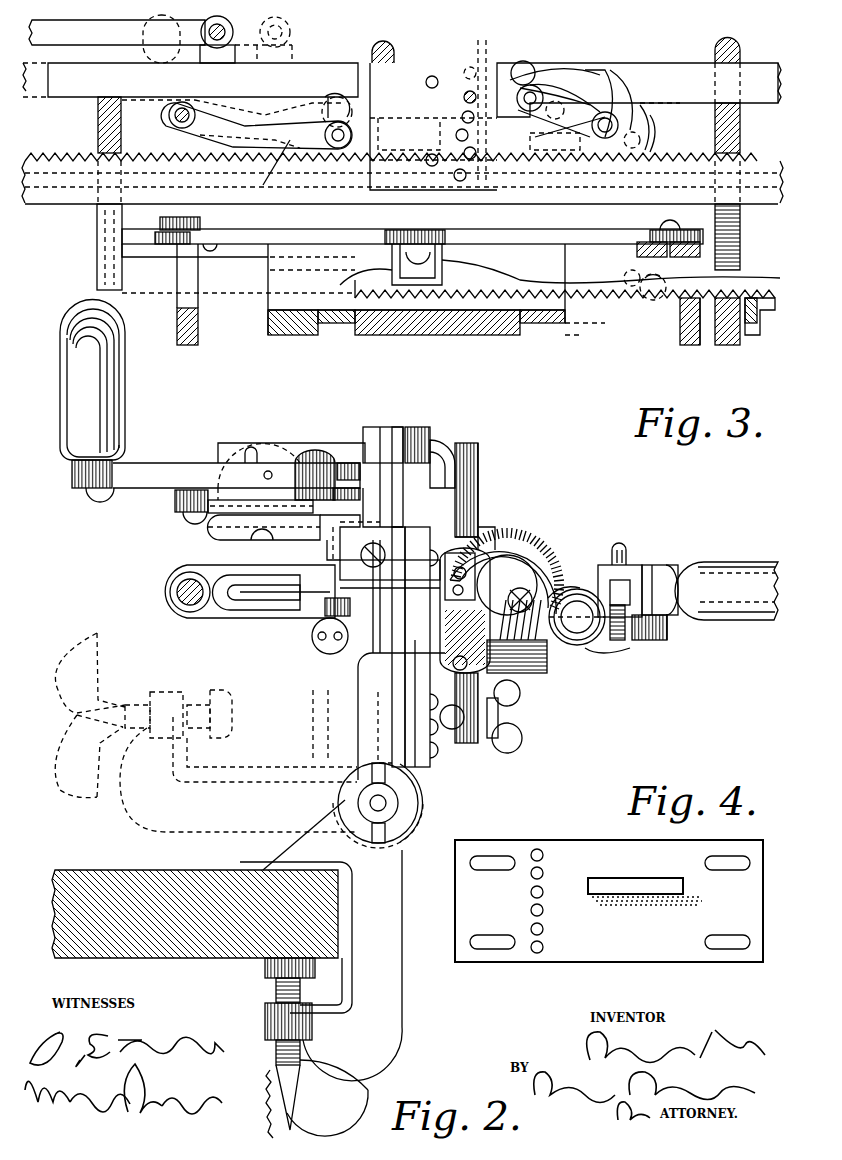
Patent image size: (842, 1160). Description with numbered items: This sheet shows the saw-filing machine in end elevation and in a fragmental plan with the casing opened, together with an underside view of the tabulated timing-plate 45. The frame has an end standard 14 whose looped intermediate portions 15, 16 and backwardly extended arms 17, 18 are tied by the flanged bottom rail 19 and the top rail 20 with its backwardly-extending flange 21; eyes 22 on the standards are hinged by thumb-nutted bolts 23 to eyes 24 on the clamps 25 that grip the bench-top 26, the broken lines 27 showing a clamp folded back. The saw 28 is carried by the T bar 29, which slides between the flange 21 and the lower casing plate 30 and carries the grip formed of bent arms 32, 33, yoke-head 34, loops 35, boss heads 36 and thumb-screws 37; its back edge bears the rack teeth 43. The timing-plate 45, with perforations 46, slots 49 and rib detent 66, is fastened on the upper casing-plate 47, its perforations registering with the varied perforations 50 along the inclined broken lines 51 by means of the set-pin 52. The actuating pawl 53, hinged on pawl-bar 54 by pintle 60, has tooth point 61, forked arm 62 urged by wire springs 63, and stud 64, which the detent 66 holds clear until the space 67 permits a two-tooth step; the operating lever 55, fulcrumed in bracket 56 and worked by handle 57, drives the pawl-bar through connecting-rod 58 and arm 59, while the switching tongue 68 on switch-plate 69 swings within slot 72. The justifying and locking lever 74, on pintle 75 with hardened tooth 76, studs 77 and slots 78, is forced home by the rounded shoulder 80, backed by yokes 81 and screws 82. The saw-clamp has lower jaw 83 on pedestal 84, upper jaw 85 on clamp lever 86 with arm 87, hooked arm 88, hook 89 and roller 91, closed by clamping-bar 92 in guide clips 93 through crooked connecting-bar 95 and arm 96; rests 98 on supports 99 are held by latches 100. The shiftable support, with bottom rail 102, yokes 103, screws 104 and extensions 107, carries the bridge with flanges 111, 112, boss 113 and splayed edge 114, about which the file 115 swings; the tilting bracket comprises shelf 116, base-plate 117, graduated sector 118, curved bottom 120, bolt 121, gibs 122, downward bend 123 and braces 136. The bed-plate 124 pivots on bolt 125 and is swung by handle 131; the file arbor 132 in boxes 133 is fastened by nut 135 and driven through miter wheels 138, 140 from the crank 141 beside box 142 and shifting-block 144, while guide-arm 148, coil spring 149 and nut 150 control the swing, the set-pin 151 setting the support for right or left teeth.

In FIG. 2, the end standard 14 is at (365, 712).
In FIG. 3, the intermediate looped portion 15 is at (728, 340).
In FIG. 2, the intermediate looped portion 16 is at (455, 655).
In FIG. 3, the backwardly extended top arm 17 is at (740, 130).
In FIG. 2, the backwardly extended top arm 17 is at (298, 447).
In FIG. 3, the backwardly extended top arm 18 is at (98, 130).
In FIG. 2, the backwardly extended top arm 18 is at (240, 467).
In FIG. 3, the flanged bottom rail 19 is at (128, 248).
In FIG. 2, the flanged bottom rail 19 is at (412, 775).
In FIG. 3, the top rail 20 is at (745, 252).
In FIG. 2, the top rail 20 is at (397, 450).
In FIG. 2, the backwardly-extending flange 21 is at (348, 522).
In FIG. 2, the eye 22 is at (410, 827).
In FIG. 2, the thumb-nutted bolt 23 is at (370, 803).
In FIG. 2, the eye 24 is at (405, 807).
In FIG. 2, the clamp 25 is at (333, 994).
In FIG. 2, the bench-top 26 is at (202, 906).
In FIG. 2, the broken lines 27 is at (206, 732).
In FIG. 3, the saw 28 is at (618, 292).
In FIG. 2, the saw 28 is at (227, 620).
In FIG. 3, the T bar 29 is at (47, 205).
In FIG. 2, the T bar 29 is at (330, 540).
In FIG. 3, the lower casing plate 30 is at (158, 127).
In FIG. 2, the lower casing plate 30 is at (217, 527).
In FIG. 2, the bent arm 32 is at (207, 597).
In FIG. 2, the bent arm 33 is at (172, 593).
In FIG. 2, the yoke-head 34 is at (334, 590).
In FIG. 2, the loop 35 is at (172, 588).
In FIG. 2, the boss head 36 is at (323, 618).
In FIG. 2, the thumb-screw 37 is at (320, 650).
In FIG. 3, the teeth 43 is at (48, 155).
In FIG. 2, the teeth 43 is at (307, 512).
In FIG. 2, the timing-plate 45 is at (218, 470).
In FIG. 4, the timing-plate 45 is at (609, 901).
In FIG. 4, the perforations 46 is at (543, 857).
In FIG. 3, the upper casing-plate 47 is at (378, 75).
In FIG. 4, the slots 49 is at (483, 940).
In FIG. 3, the perforations 50 is at (455, 172).
In FIG. 3, the inclined broken lines 51 is at (475, 95).
In FIG. 3, the set-pin 52 is at (464, 97).
In FIG. 2, the set-pin 52 is at (250, 450).
In FIG. 3, the actuating pawl 53 is at (555, 104).
In FIG. 3, the pawl-bar 54 is at (402, 90).
In FIG. 2, the pawl-bar 54 is at (217, 518).
In FIG. 2, the operating lever 55 is at (113, 487).
In FIG. 2, the bracket 56 is at (290, 462).
In FIG. 2, the handle 57 is at (92, 394).
In FIG. 3, the connecting-rod 58 is at (131, 33).
In FIG. 2, the connecting-rod 58 is at (192, 492).
In FIG. 3, the arm 59 is at (217, 45).
In FIG. 2, the arm 59 is at (228, 508).
In FIG. 3, the hinging pintle 60 is at (532, 85).
In FIG. 3, the tooth point 61 is at (595, 140).
In FIG. 3, the forked arm 62 is at (607, 110).
In FIG. 3, the wire springs 63 is at (595, 97).
In FIG. 3, the upstanding stud 64 is at (625, 105).
In FIG. 3, the rib detent 66 is at (544, 151).
In FIG. 4, the rib detent 66 is at (628, 882).
In FIG. 3, the space 67 is at (658, 138).
In FIG. 3, the switching tongue 68 is at (575, 95).
In FIG. 3, the switch-plate 69 is at (565, 98).
In FIG. 3, the curved slot 72 is at (640, 110).
In FIG. 3, the justifying and locking lever 74 is at (256, 124).
In FIG. 3, the pintle 75 is at (174, 118).
In FIG. 3, the hardened tooth 76 is at (276, 168).
In FIG. 3, the vertical studs 77 is at (337, 148).
In FIG. 3, the curved slots 78 is at (328, 104).
In FIG. 3, the rounded shoulder 80 is at (402, 48).
In FIG. 3, the vertical yokes 81 is at (395, 55).
In FIG. 2, the vertical yokes 81 is at (215, 548).
In FIG. 3, the attaching screws 82 is at (386, 48).
In FIG. 2, the attaching screws 82 is at (215, 538).
In FIG. 2, the lower jaw 83 is at (360, 622).
In FIG. 3, the pedestal support 84 is at (445, 232).
In FIG. 2, the pedestal support 84 is at (387, 607).
In FIG. 3, the upper jaw 85 is at (405, 272).
In FIG. 2, the upper jaw 85 is at (396, 581).
In FIG. 3, the clamp lever 86 is at (310, 236).
In FIG. 3, the arm 87 is at (672, 237).
In FIG. 3, the hooked arm 88 is at (165, 226).
In FIG. 3, the hook 89 is at (200, 228).
In FIG. 3, the anti-friction roller 91 is at (170, 248).
In FIG. 2, the clamping-bar 92 is at (385, 448).
In FIG. 2, the guide clips 93 is at (385, 450).
In FIG. 2, the crooked connecting-bar 95 is at (445, 445).
In FIG. 2, the arm 96 is at (417, 440).
In FIG. 3, the retiring rests 98 is at (758, 315).
In FIG. 2, the retiring rests 98 is at (503, 553).
In FIG. 3, the supports 99 is at (752, 340).
In FIG. 2, the supports 99 is at (440, 655).
In FIG. 2, the notched latches 100 is at (400, 558).
In FIG. 3, the bottom rail 102 is at (215, 252).
In FIG. 3, the vertical yokes 103 is at (183, 275).
In FIG. 2, the vertical yokes 103 is at (417, 745).
In FIG. 3, the screws 104 is at (210, 255).
In FIG. 3, the extensions 107 is at (528, 255).
In FIG. 2, the top vertical flange 111 is at (466, 448).
In FIG. 2, the bottom vertical flange 112 is at (465, 745).
In FIG. 3, the boss 113 is at (333, 325).
In FIG. 3, the splayed edge 114 is at (395, 322).
In FIG. 2, the circular revolving file 115 is at (507, 567).
In FIG. 2, the shelf 116 is at (673, 642).
In FIG. 2, the base-plate 117 is at (478, 505).
In FIG. 2, the graduated sector 118 is at (482, 462).
In FIG. 2, the curved bottom 120 is at (480, 745).
In FIG. 2, the bolt 121 is at (515, 748).
In FIG. 2, the gibs 122 is at (480, 515).
In FIG. 2, the downward bend 123 is at (555, 673).
In FIG. 2, the bed-plate 124 is at (670, 628).
In FIG. 2, the pivot bolt 125 is at (620, 650).
In FIG. 2, the handle 131 is at (610, 650).
In FIG. 2, the file arbor 132 is at (572, 588).
In FIG. 2, the boxes 133 is at (583, 565).
In FIG. 2, the fastening nut 135 is at (537, 553).
In FIG. 2, the braces 136 is at (527, 673).
In FIG. 2, the miter gear wheel 138 is at (610, 565).
In FIG. 2, the miter wheel 140 is at (620, 545).
In FIG. 2, the handled crank 141 is at (716, 580).
In FIG. 2, the box 142 is at (665, 562).
In FIG. 2, the shifting-block 144 is at (615, 570).
In FIG. 2, the guide-arm 148 is at (557, 650).
In FIG. 2, the coil spring 149 is at (545, 672).
In FIG. 2, the nut 150 is at (640, 643).
In FIG. 3, the set-pin 151 is at (650, 300).